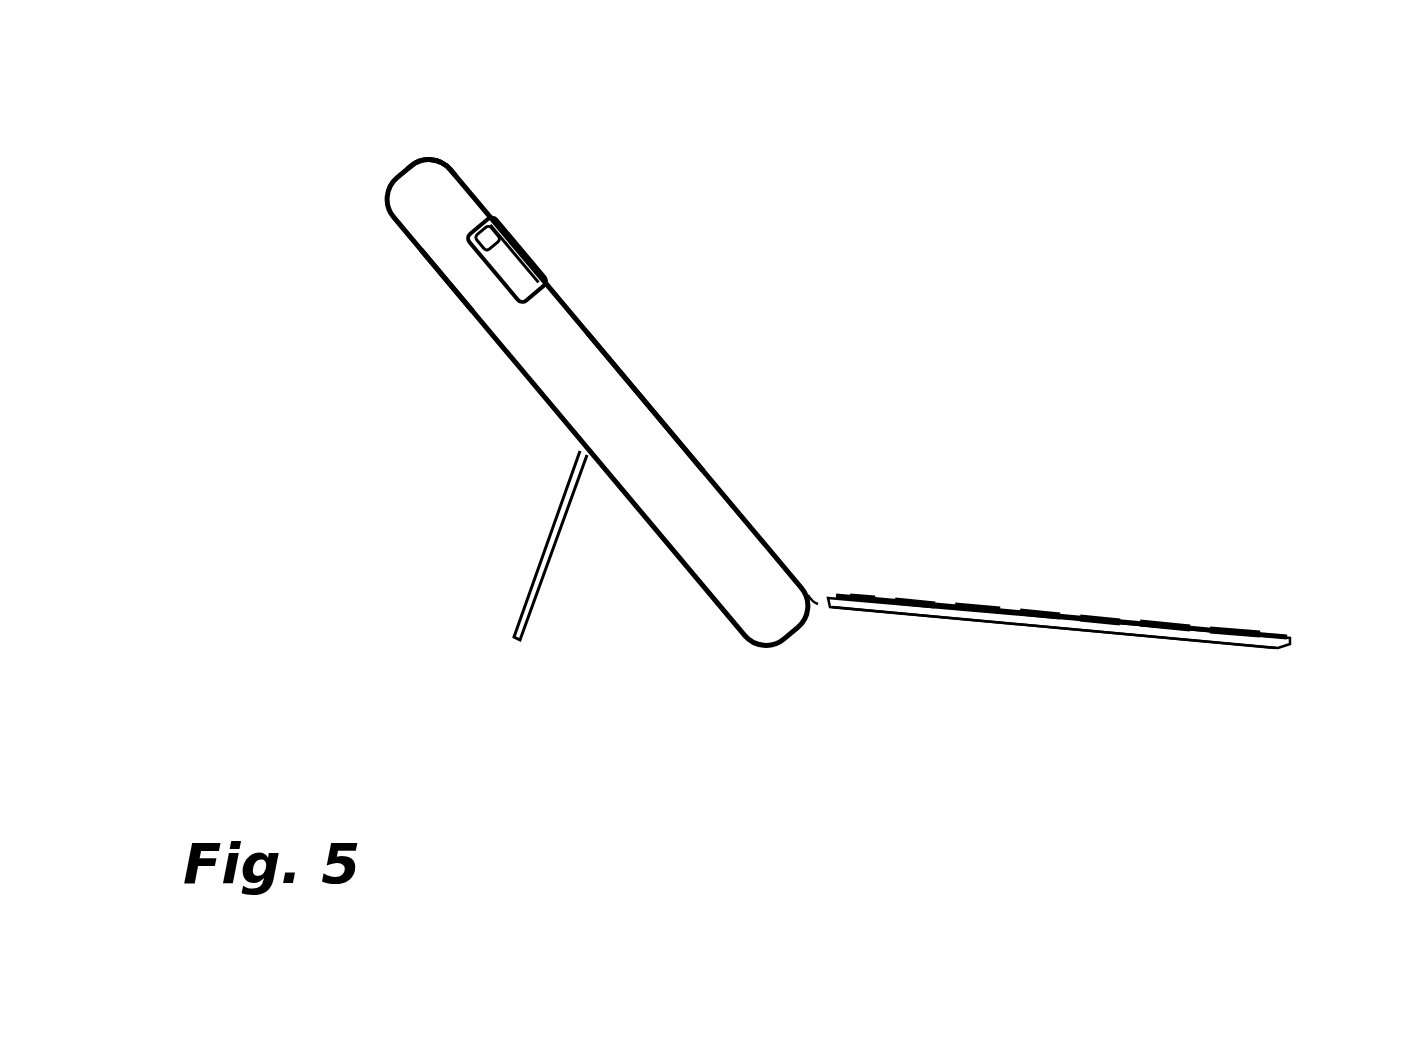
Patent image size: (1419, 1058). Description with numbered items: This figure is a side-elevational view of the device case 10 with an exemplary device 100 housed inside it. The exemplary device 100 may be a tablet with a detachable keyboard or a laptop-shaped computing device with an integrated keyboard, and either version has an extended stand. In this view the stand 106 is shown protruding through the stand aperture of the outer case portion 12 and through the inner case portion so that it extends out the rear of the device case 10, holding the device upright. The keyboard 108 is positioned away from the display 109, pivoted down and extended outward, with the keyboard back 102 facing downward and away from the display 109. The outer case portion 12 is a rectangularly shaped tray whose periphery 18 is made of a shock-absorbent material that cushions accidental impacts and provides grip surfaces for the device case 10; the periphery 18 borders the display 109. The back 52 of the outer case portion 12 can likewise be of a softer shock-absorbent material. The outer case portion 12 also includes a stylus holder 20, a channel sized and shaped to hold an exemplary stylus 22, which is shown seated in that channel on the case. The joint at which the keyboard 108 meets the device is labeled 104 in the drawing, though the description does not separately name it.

The device case 10 is at (998, 90).
The outer case portion 12 is at (368, 126).
The periphery 18 is at (404, 205).
The stylus holder 20 is at (491, 221).
The stylus 22 is at (511, 259).
The back of outer case portion 52 is at (447, 287).
The display 109 is at (695, 372).
The exemplary device 100 is at (947, 553).
The keyboard back 102 is at (1087, 630).
The hinge connector 104 is at (815, 602).
The stand 106 is at (541, 573).
The keyboard 108 is at (1243, 591).